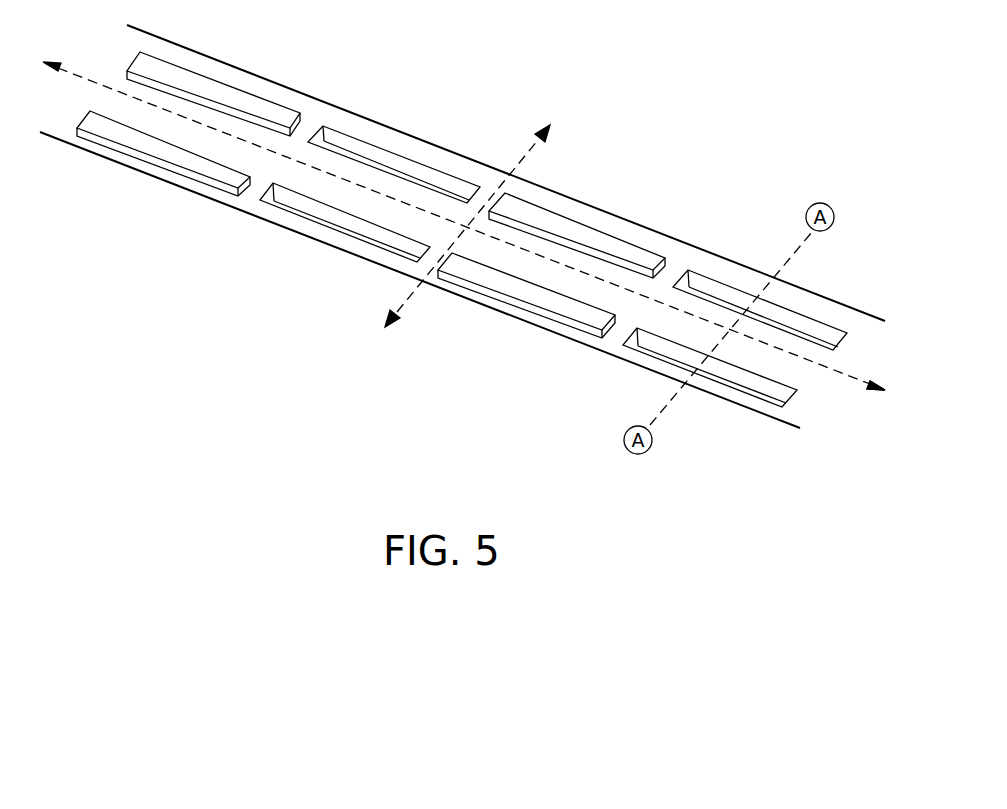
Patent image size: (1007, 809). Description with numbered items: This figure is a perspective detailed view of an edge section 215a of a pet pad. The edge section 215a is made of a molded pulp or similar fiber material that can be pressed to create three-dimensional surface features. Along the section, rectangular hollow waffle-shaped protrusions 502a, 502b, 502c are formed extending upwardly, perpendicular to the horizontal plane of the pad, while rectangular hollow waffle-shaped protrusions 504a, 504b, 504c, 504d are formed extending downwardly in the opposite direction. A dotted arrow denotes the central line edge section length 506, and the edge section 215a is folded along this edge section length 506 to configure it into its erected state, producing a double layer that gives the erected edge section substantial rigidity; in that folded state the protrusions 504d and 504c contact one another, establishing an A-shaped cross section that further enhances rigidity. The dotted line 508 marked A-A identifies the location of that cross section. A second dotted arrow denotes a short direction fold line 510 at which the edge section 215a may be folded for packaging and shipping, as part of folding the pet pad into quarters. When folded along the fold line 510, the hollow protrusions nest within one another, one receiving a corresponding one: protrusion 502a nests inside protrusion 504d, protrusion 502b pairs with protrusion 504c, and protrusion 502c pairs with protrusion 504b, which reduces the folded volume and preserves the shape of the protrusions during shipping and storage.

The edge section 215a is at (353, 254).
The protrusion 502a is at (110, 142).
The protrusion 502b is at (180, 72).
The protrusion 502c is at (573, 226).
The protrusion 504a is at (288, 213).
The protrusion 504b is at (372, 144).
The protrusion 504c is at (707, 273).
The protrusion 504d is at (638, 352).
The edge section length 506 is at (847, 375).
The dotted line 508 is at (805, 240).
The short direction fold line 510 is at (405, 302).